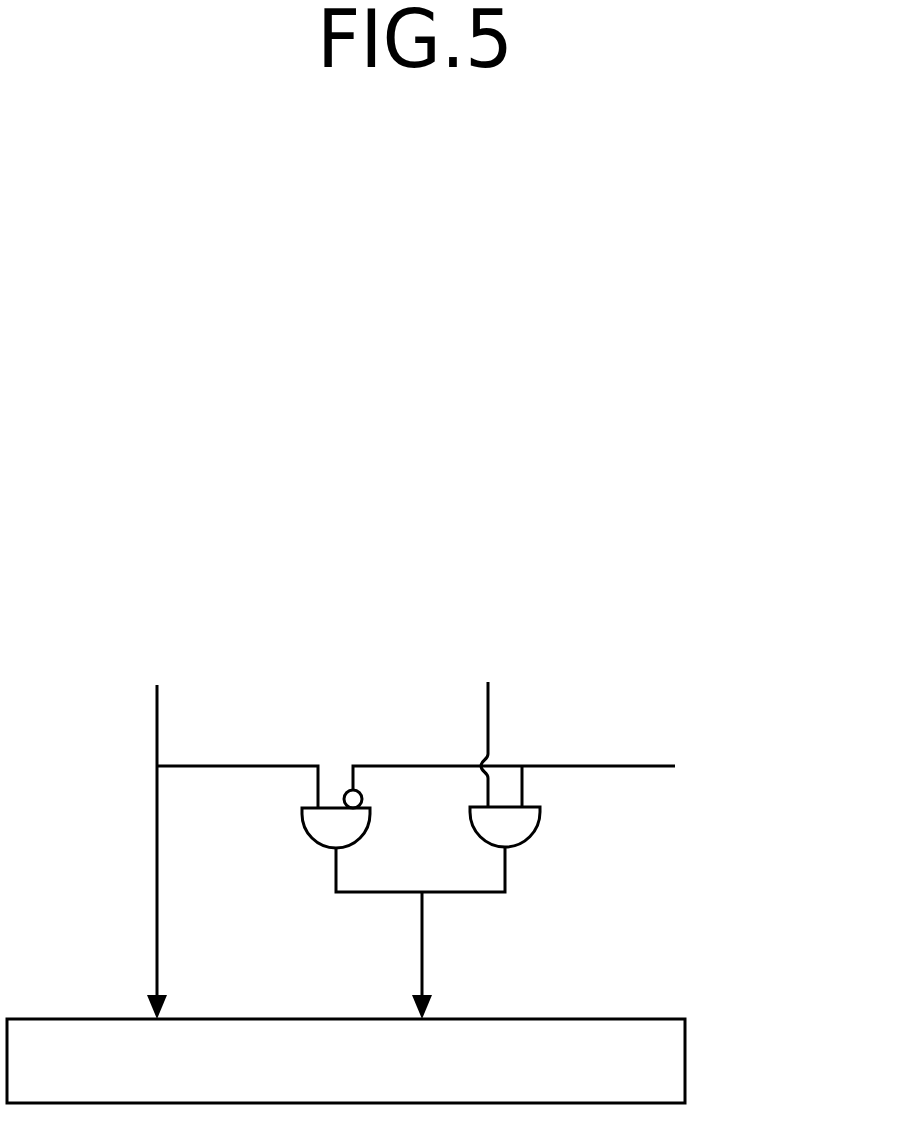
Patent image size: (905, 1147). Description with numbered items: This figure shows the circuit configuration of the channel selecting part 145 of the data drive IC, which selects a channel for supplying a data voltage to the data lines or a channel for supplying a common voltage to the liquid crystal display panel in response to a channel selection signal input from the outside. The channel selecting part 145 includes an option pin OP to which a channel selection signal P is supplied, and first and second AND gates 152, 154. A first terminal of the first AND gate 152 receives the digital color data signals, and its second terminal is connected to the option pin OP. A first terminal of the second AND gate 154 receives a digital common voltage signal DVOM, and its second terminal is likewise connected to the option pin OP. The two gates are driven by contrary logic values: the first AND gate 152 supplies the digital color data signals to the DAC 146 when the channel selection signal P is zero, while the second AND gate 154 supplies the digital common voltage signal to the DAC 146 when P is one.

The channel selecting part 145 is at (108, 583).
The digital/analog converter (DAC) 146 is at (685, 1068).
The first AND gate 152 is at (312, 838).
The second AND gate 154 is at (534, 832).